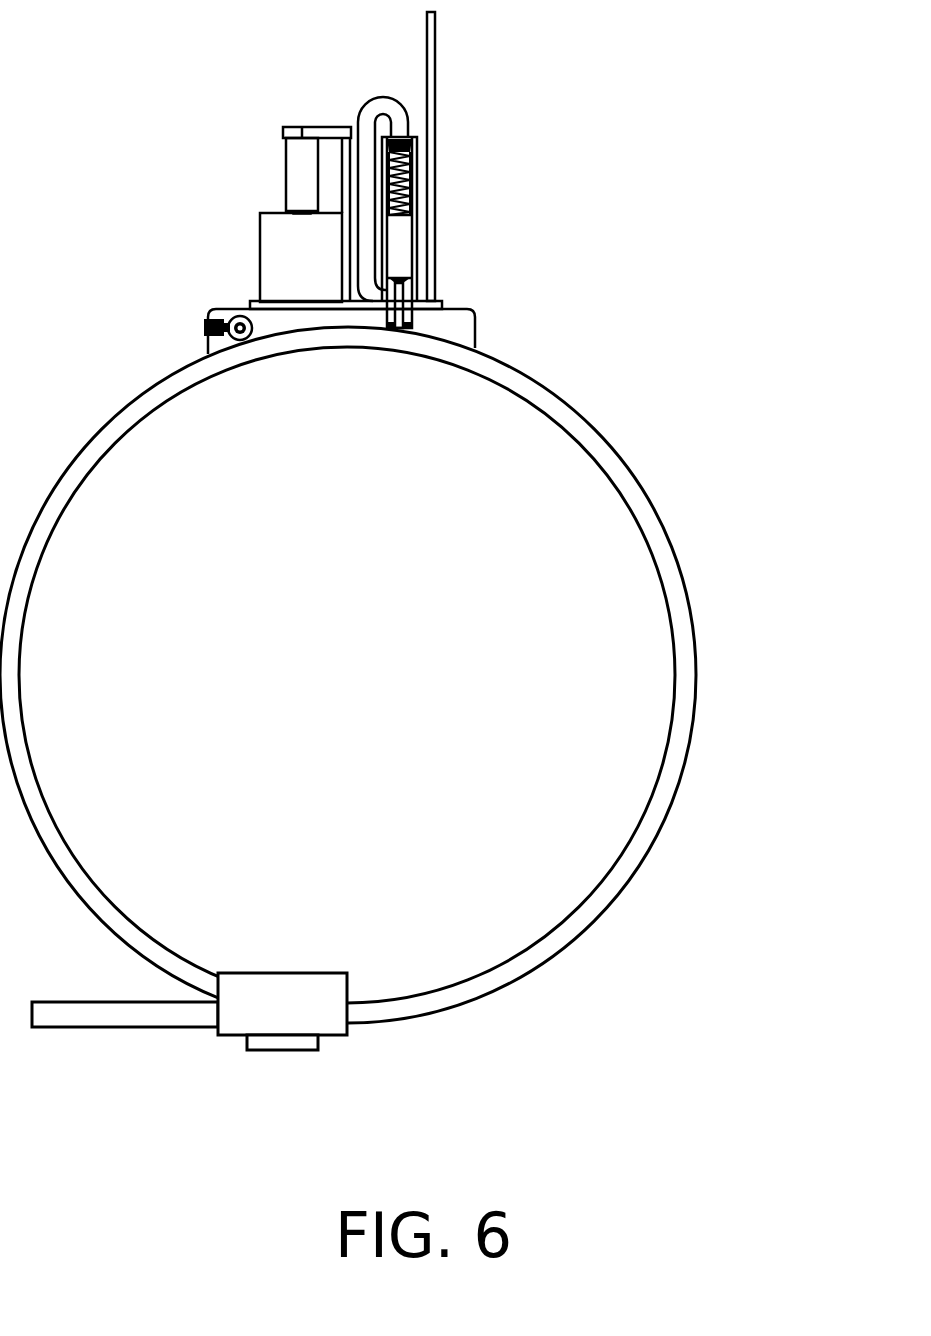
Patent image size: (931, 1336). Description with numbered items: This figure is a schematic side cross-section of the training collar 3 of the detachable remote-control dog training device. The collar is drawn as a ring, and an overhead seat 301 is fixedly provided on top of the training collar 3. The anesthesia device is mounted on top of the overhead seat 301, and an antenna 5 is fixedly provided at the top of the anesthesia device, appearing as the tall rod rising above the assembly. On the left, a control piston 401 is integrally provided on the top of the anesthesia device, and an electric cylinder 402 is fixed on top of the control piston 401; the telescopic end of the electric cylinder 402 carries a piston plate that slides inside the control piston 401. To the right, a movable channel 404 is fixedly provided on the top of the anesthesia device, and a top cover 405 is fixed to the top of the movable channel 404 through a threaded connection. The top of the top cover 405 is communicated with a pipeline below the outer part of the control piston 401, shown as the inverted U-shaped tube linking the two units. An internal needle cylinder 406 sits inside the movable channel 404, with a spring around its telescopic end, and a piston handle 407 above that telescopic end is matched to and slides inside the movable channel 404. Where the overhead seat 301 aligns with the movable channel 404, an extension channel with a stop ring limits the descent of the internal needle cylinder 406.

The training collar 3 is at (577, 928).
The antenna 5 is at (435, 138).
The overhead seat 301 is at (453, 325).
The control piston 401 is at (278, 275).
The electric cylinder 402 is at (303, 192).
The movable channel 404 is at (417, 228).
The top cover 405 is at (407, 136).
The internal needle cylinder 406 is at (405, 268).
The piston handle 407 is at (412, 152).